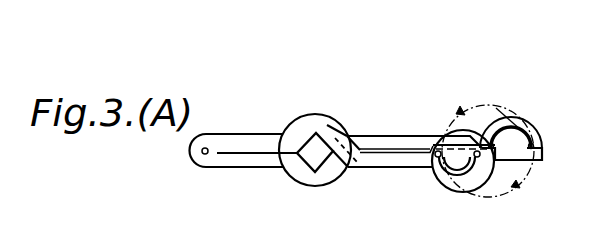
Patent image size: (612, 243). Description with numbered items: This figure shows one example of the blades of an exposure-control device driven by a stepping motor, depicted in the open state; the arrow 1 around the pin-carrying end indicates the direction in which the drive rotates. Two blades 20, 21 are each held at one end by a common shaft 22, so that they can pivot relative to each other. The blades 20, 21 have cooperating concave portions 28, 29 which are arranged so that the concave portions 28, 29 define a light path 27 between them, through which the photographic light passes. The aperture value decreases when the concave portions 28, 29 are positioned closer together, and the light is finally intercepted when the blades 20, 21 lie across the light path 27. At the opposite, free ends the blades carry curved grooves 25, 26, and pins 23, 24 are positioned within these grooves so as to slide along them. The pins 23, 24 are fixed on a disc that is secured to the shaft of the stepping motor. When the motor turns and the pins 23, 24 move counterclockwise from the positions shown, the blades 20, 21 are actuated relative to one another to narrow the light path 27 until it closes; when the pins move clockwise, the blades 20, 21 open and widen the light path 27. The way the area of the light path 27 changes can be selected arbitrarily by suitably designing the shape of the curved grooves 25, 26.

The rotation direction of clamp head 1 is at (479, 105).
The blade 20 is at (399, 162).
The blade 21 is at (400, 138).
The common shaft 22 is at (204, 155).
The pin 23 is at (457, 158).
The pin 24 is at (541, 147).
The curved groove 25 is at (438, 153).
The curved groove 26 is at (508, 130).
The light path 27 is at (313, 155).
The concave portion 28 is at (318, 134).
The concave portion 29 is at (314, 156).